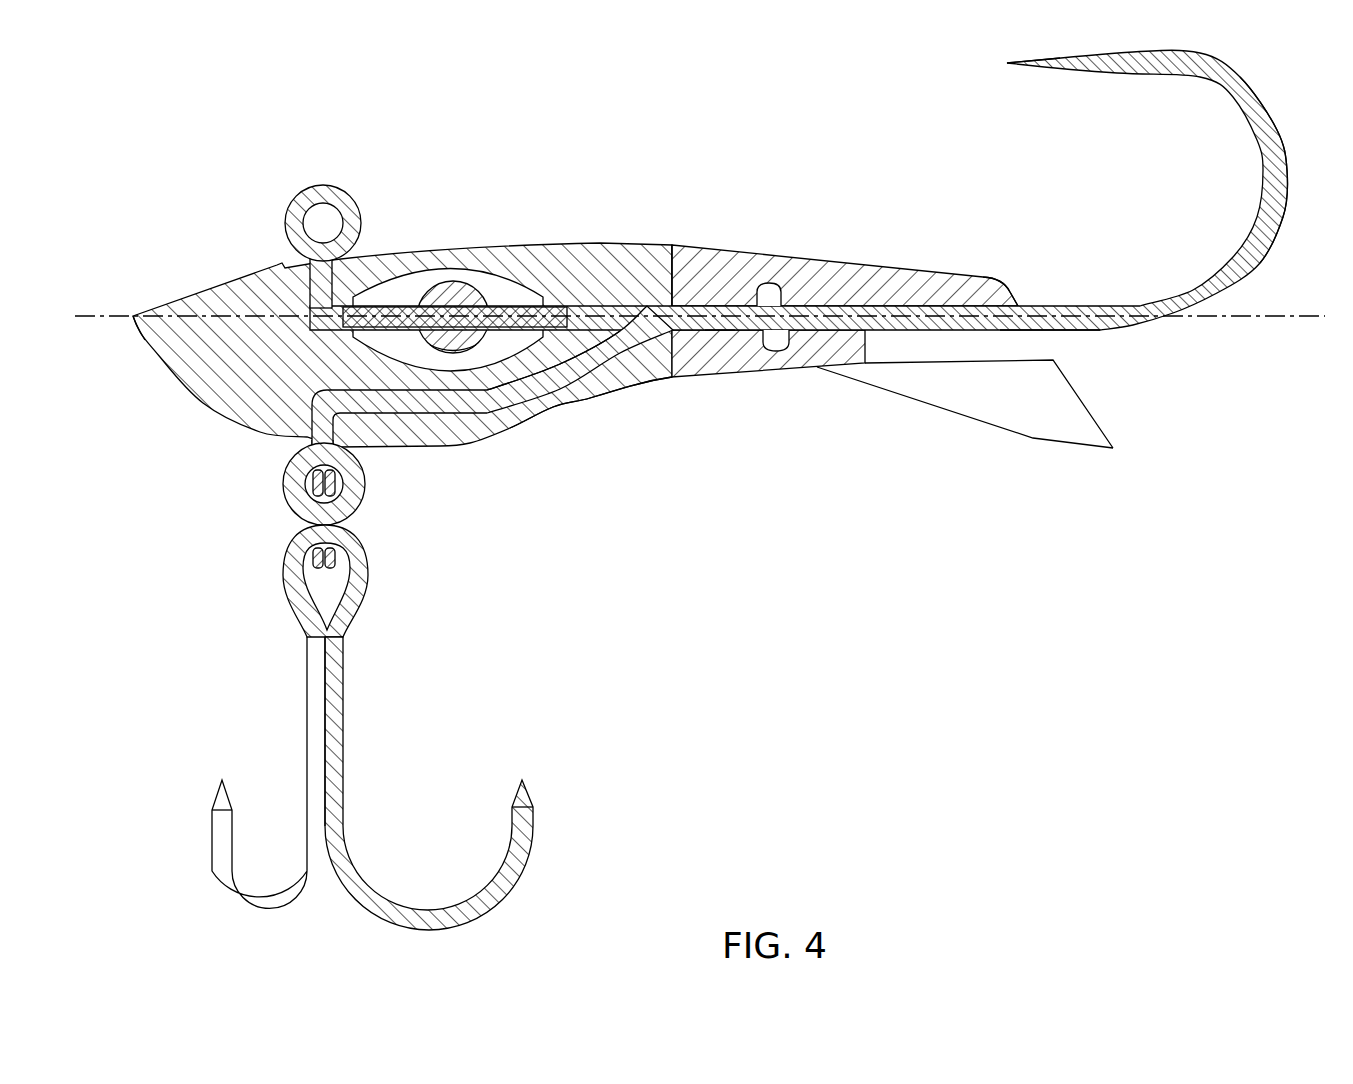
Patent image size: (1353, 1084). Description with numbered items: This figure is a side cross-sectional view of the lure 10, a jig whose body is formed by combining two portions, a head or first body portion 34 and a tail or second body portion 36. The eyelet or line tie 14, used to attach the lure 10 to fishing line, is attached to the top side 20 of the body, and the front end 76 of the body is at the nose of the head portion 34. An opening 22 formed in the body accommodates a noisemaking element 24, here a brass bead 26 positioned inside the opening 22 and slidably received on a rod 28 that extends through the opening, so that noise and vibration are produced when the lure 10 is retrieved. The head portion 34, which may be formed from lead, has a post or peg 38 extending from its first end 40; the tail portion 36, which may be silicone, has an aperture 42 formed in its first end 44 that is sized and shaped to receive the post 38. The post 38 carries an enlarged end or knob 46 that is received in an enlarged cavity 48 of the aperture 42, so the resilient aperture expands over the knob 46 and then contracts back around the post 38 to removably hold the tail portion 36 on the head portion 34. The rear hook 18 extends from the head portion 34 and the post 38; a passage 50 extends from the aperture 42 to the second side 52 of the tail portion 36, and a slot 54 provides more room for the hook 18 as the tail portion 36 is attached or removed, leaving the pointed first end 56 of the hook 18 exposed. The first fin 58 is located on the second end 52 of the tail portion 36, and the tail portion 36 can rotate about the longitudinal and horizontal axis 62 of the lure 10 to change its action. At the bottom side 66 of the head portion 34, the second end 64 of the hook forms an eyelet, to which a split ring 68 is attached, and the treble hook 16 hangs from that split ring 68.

The lure 10 is at (515, 165).
The eyelet or line tie 14 is at (330, 185).
The treble hook 16 is at (343, 740).
The rear hook 18 is at (1290, 173).
The top side 20 is at (808, 128).
The opening 22 is at (383, 298).
The noisemaking element 24 is at (443, 287).
The brass bead 26 is at (468, 300).
The rod 28 is at (500, 310).
The head or first body portion 34 is at (542, 428).
The tail or second body portion 36 is at (862, 388).
The post or peg 38 is at (727, 290).
The first end of the head portion 40 is at (663, 407).
The aperture 42 is at (718, 326).
The first end of the tail portion 44 is at (713, 235).
The enlarged end or knob 46 is at (778, 282).
The enlarged cavity 48 is at (795, 340).
The passage 50 is at (965, 316).
The second side or second end of the tail portion 52 is at (957, 420).
The slot 54 is at (1033, 338).
The pointed first end 56 is at (1000, 68).
The first fin 58 is at (1113, 448).
The longitudinal and horizontal axis 62 is at (1308, 313).
The second end with eyelet 64 is at (355, 488).
The bottom side 66 is at (725, 447).
The split ring 68 is at (368, 583).
The front end 76 is at (127, 363).